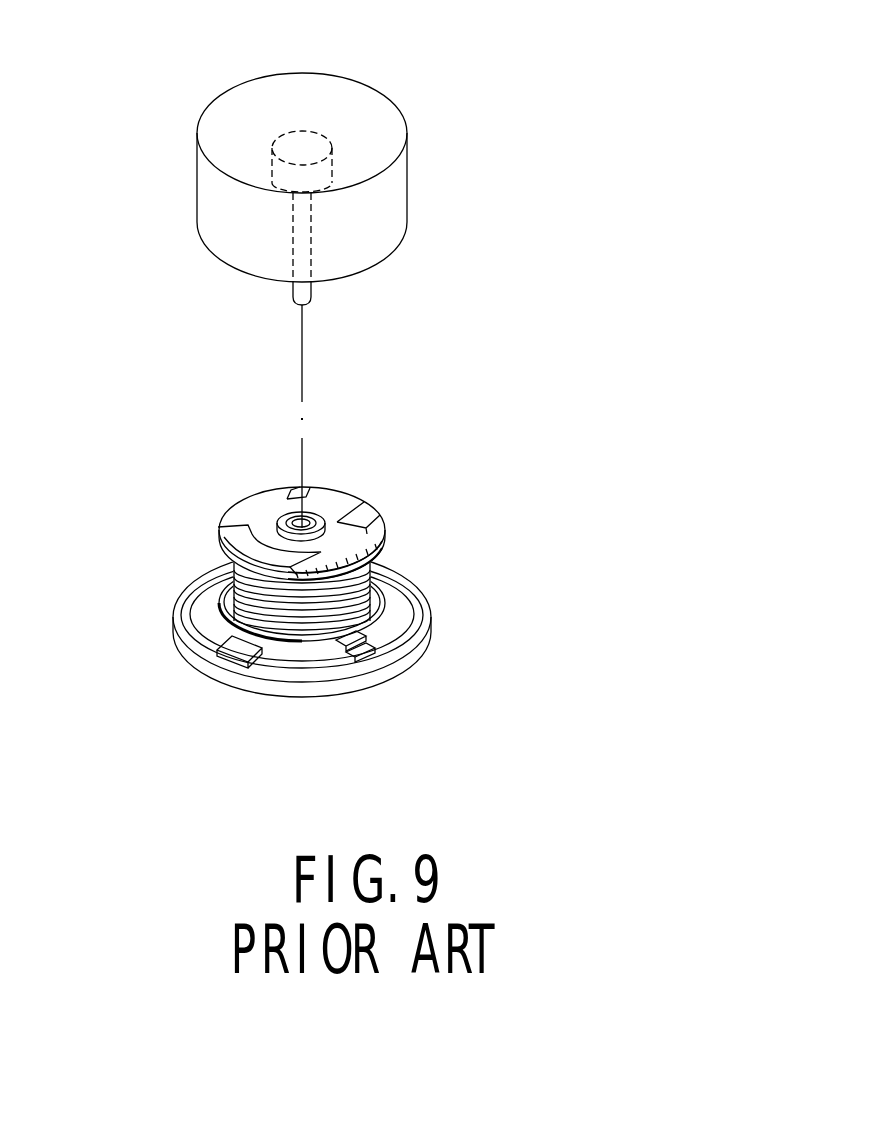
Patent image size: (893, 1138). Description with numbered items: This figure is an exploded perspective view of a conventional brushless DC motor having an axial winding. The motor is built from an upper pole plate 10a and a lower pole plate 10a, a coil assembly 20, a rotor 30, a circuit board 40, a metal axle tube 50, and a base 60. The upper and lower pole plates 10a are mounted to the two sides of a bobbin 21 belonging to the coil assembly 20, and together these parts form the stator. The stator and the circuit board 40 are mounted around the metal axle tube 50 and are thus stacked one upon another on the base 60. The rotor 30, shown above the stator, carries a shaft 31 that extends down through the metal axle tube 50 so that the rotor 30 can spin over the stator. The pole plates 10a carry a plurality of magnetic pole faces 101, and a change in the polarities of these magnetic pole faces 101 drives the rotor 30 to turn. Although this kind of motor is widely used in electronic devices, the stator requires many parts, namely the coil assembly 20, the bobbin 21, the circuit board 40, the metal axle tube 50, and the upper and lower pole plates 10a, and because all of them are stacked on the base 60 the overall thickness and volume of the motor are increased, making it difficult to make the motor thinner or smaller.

The rotor 30 is at (362, 108).
The shaft 31 is at (281, 285).
The metal axle tube 50 is at (313, 513).
The pole plate 10a is at (337, 520).
The magnetic pole face 101 is at (385, 555).
The coil assembly 20 is at (395, 563).
The bobbin 21 is at (220, 541).
The base 60 is at (198, 657).
The circuit board 40 is at (387, 632).